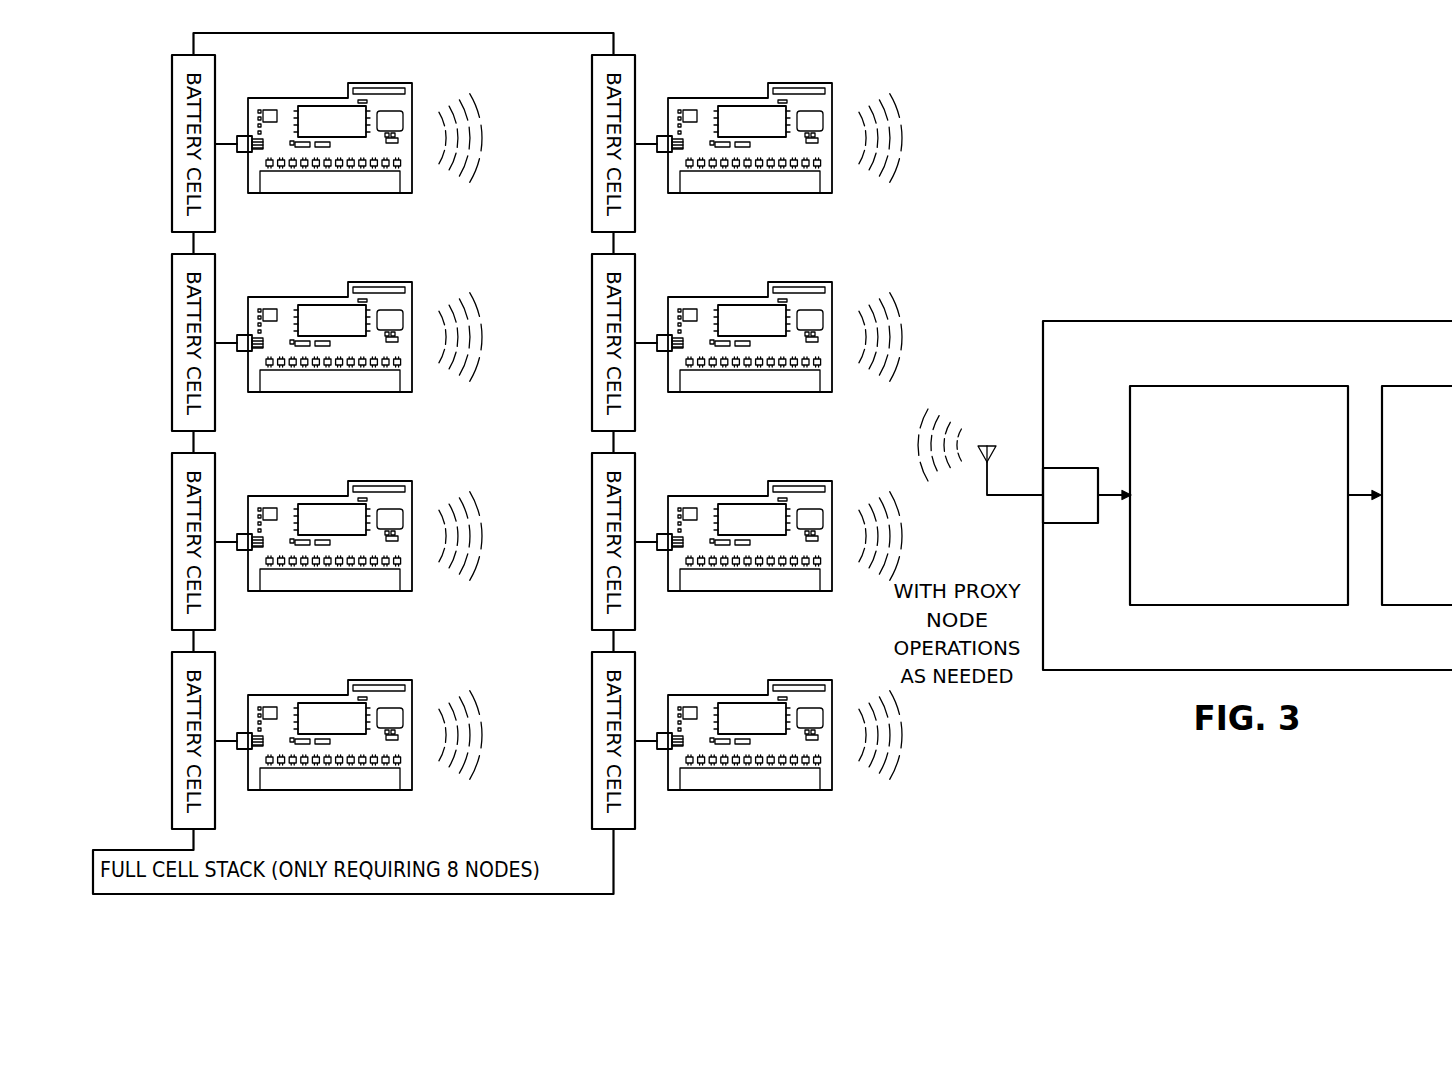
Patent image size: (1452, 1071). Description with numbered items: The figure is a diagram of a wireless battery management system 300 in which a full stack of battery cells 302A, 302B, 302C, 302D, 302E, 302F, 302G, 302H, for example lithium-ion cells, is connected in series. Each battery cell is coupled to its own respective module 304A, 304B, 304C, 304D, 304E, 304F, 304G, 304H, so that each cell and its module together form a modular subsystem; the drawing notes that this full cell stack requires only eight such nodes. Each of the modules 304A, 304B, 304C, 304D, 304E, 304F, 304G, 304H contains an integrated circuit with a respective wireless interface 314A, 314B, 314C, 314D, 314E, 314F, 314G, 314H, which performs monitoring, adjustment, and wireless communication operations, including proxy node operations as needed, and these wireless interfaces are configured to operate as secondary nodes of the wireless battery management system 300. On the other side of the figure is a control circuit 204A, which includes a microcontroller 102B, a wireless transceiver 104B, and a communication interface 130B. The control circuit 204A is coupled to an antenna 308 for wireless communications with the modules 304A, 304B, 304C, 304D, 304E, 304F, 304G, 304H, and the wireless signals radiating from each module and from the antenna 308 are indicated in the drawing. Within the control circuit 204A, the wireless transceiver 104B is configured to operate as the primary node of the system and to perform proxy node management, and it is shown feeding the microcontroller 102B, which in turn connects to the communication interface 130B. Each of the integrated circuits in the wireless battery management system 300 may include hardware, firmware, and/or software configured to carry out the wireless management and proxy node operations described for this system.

The wireless battery management system 300 is at (1014, 91).
The battery cell 302A is at (148, 740).
The battery cell 302B is at (148, 541).
The battery cell 302C is at (148, 342).
The battery cell 302D is at (170, 128).
The battery cell 302E is at (567, 143).
The battery cell 302F is at (567, 342).
The battery cell 302G is at (567, 541).
The battery cell 302H is at (567, 740).
The module 304A is at (348, 763).
The module 304B is at (348, 564).
The module 304C is at (348, 365).
The module 304D is at (328, 193).
The module 304E is at (768, 166).
The module 304F is at (768, 365).
The module 304G is at (768, 564).
The module 304H is at (768, 763).
The wireless interface 314A is at (330, 691).
The wireless interface 314B is at (330, 492).
The wireless interface 314C is at (330, 293).
The wireless interface 314D is at (330, 115).
The wireless interface 314E is at (750, 93).
The wireless interface 314F is at (750, 293).
The wireless interface 314G is at (750, 492).
The wireless interface 314H is at (750, 691).
The antenna 308 is at (990, 445).
The wireless transceiver 104B is at (1080, 467).
The control circuit 204A is at (1214, 369).
The microcontroller 102B is at (1210, 529).
The communication interface 130B is at (1415, 385).